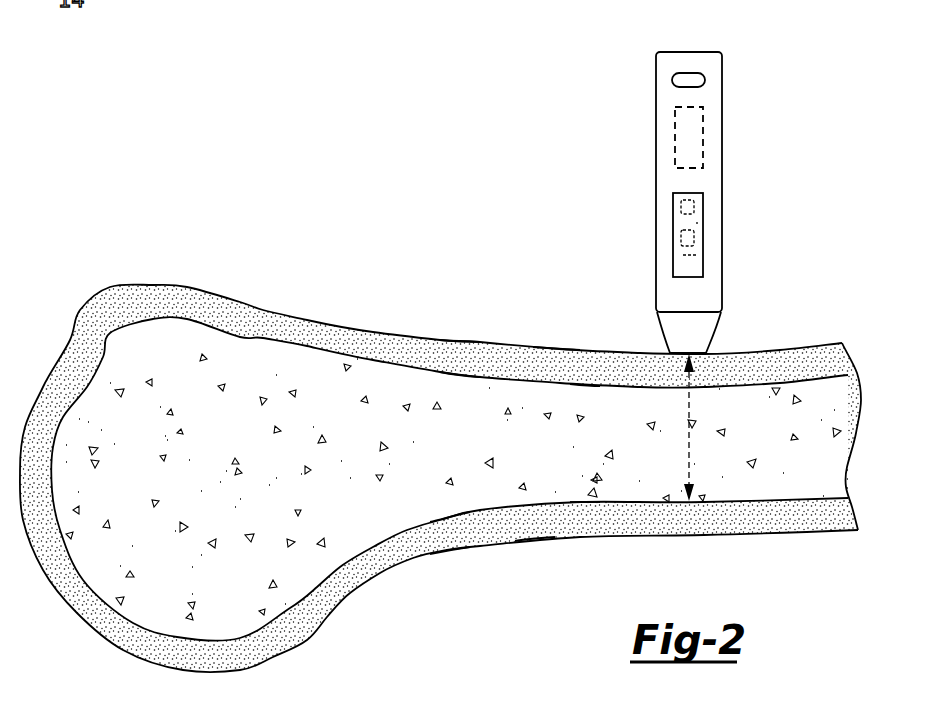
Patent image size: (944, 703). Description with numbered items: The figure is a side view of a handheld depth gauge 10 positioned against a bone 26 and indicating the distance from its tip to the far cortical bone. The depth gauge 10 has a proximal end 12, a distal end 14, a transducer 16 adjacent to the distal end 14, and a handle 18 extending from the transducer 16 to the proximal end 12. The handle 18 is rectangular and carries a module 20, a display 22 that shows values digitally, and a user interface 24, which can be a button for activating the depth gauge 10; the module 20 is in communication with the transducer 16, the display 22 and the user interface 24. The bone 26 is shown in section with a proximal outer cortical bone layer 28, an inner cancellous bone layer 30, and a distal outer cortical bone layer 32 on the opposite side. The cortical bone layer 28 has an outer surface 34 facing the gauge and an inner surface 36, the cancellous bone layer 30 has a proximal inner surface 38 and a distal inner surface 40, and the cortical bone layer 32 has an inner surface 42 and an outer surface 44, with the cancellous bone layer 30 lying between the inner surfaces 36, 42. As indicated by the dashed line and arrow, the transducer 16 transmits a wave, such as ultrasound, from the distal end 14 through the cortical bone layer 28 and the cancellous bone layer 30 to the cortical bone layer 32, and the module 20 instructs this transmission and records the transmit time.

The depth gauge 10 is at (671, 182).
The proximal end 12 is at (686, 52).
The distal end 14 is at (680, 362).
The transducer 16 is at (716, 333).
The handle 18 is at (722, 195).
The module 20 is at (703, 147).
The display 22 is at (700, 236).
The user interface 24 is at (705, 80).
The bone 26 is at (118, 271).
The proximal outer cortical bone layer 28 is at (553, 348).
The inner cancellous bone layer 30 is at (550, 456).
The distal outer cortical bone layer 32 is at (530, 538).
The outer surface 34 is at (460, 342).
The inner surface 36 is at (458, 377).
The proximal inner surface 38 is at (587, 385).
The distal inner surface 40 is at (583, 503).
The inner surface 42 is at (448, 514).
The outer surface 44 is at (451, 560).